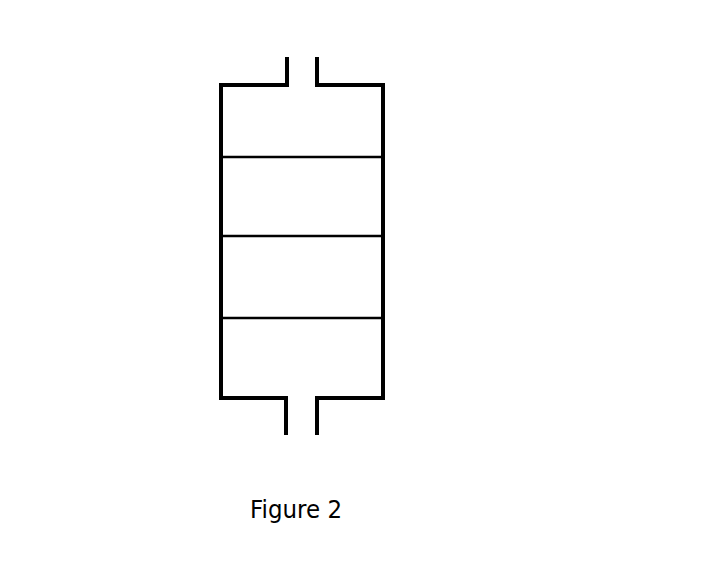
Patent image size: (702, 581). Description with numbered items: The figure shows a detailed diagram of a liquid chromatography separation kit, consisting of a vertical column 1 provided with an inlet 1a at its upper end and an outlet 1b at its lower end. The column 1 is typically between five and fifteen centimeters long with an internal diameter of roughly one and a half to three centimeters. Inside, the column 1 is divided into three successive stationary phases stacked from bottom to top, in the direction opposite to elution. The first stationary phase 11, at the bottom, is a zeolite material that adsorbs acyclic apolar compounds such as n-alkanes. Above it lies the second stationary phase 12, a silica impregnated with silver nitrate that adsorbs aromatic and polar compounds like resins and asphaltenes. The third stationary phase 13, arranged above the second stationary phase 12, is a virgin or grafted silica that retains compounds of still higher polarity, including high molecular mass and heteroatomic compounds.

The column 1 is at (489, 124).
The inlet 1a is at (321, 72).
The outlet 1b is at (320, 425).
The first stationary phase 11 is at (248, 367).
The second stationary phase 12 is at (258, 281).
The third stationary phase 13 is at (253, 202).